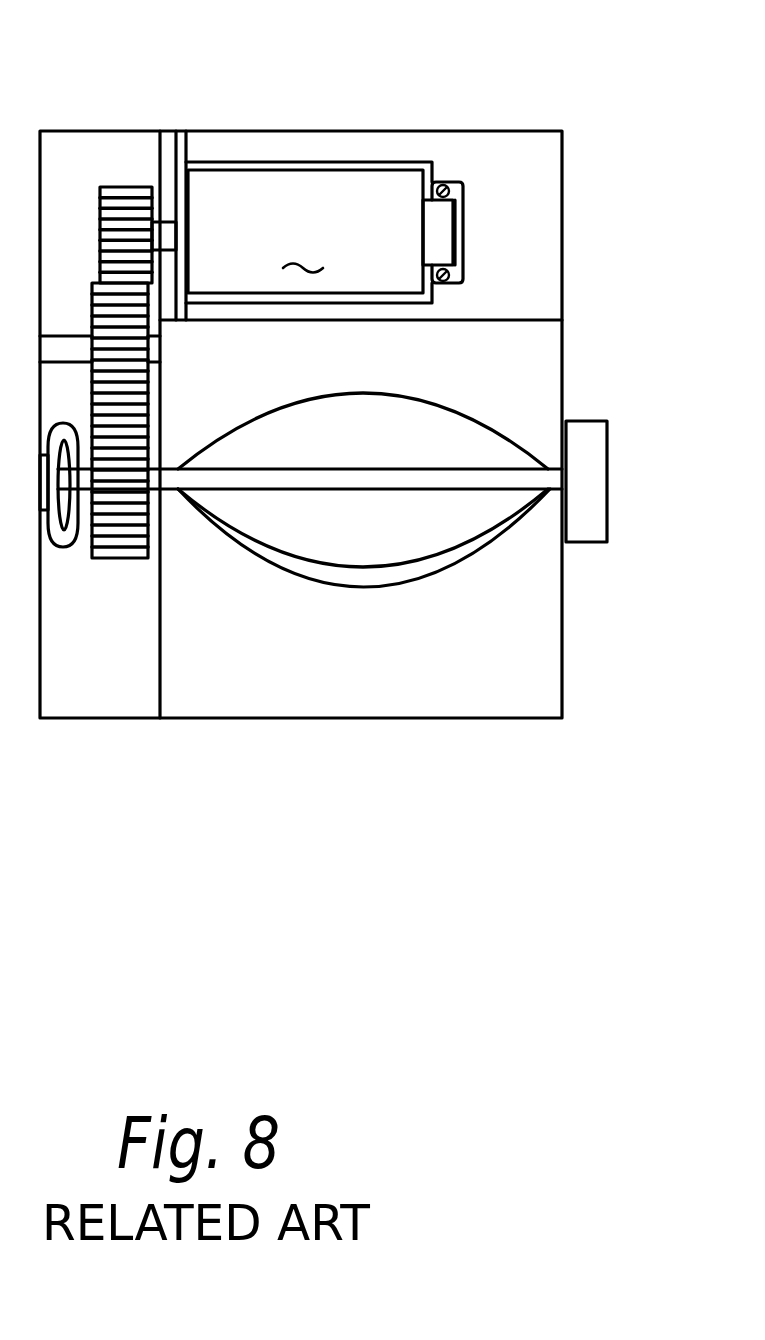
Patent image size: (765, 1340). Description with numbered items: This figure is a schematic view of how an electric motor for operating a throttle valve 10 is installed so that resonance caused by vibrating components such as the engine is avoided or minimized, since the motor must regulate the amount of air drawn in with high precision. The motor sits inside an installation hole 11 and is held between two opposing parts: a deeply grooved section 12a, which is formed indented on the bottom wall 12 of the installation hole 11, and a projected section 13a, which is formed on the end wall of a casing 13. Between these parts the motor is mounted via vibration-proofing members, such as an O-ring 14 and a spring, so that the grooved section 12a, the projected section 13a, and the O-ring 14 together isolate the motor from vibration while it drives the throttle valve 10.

The throttle valve 10 is at (368, 562).
The installation hole 11 is at (291, 162).
The bottom wall 12 is at (466, 206).
The deeply grooved section 12a is at (463, 278).
The casing 13 is at (236, 162).
The projected section 13a is at (443, 238).
The O-ring 14 is at (443, 184).